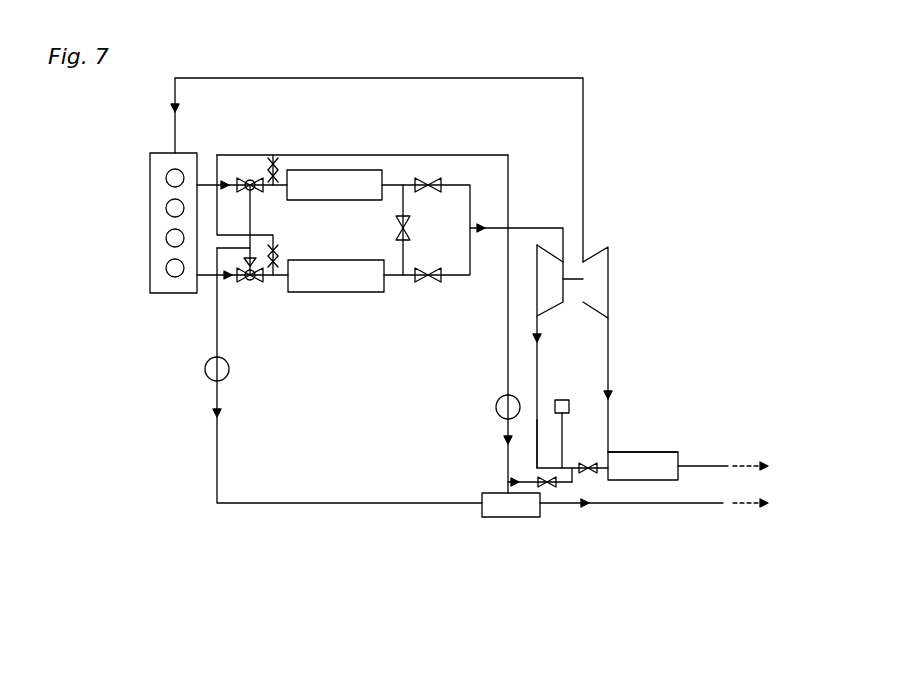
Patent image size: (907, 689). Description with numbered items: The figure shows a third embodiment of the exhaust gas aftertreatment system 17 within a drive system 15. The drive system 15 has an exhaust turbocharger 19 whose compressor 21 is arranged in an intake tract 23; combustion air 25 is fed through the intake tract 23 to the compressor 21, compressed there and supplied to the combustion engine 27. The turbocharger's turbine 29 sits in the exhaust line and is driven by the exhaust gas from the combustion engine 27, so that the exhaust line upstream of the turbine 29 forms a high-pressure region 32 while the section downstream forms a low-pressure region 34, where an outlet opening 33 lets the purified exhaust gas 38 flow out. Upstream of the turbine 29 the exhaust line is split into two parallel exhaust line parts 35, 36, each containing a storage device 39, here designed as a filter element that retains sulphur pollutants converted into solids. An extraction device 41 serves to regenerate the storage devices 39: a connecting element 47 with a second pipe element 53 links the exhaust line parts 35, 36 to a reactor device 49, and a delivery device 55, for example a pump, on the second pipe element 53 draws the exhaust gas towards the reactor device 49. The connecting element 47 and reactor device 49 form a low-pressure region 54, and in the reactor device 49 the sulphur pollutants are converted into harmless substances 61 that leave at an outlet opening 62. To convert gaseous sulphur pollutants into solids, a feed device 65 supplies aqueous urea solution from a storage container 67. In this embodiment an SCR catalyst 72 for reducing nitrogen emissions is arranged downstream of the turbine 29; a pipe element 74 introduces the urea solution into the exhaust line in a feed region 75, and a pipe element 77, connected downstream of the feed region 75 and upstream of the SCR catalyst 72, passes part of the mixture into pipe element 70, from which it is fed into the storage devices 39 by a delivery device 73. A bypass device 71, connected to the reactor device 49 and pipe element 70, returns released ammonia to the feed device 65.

The drive system 15 is at (770, 110).
The exhaust gas aftertreatment system 17 is at (372, 372).
The exhaust turbocharger 19 is at (580, 259).
The compressor 21 is at (600, 290).
The intake tract 23 is at (548, 79).
The combustion air 25 is at (608, 423).
The combustion engine 27 is at (150, 188).
The turbine 29 is at (546, 298).
The high-pressure region 32 is at (504, 130).
The outlet opening 33 is at (731, 453).
The low-pressure region 34 is at (737, 369).
The exhaust line part 35 is at (403, 176).
The exhaust line part 36 is at (317, 300).
The purified exhaust gas 38 is at (760, 455).
The storage device 39 is at (340, 200).
The extraction device 41 is at (180, 377).
The connecting element 47 is at (180, 525).
The reactor device 49 is at (505, 517).
The second pipe element 53 is at (217, 468).
The low-pressure region 54 is at (542, 601).
The delivery device 55 is at (208, 360).
The harmless substances 61 is at (745, 508).
The outlet opening 62 is at (715, 516).
The feed device 65 is at (616, 518).
The storage container 67 is at (570, 405).
The pipe element 70 is at (508, 165).
The bypass device 71 is at (500, 486).
The SCR catalyst 72 is at (665, 448).
The delivery device 73 is at (499, 401).
The pipe element 74 is at (563, 430).
The feed region 75 is at (547, 425).
The pipe element 77 is at (574, 479).